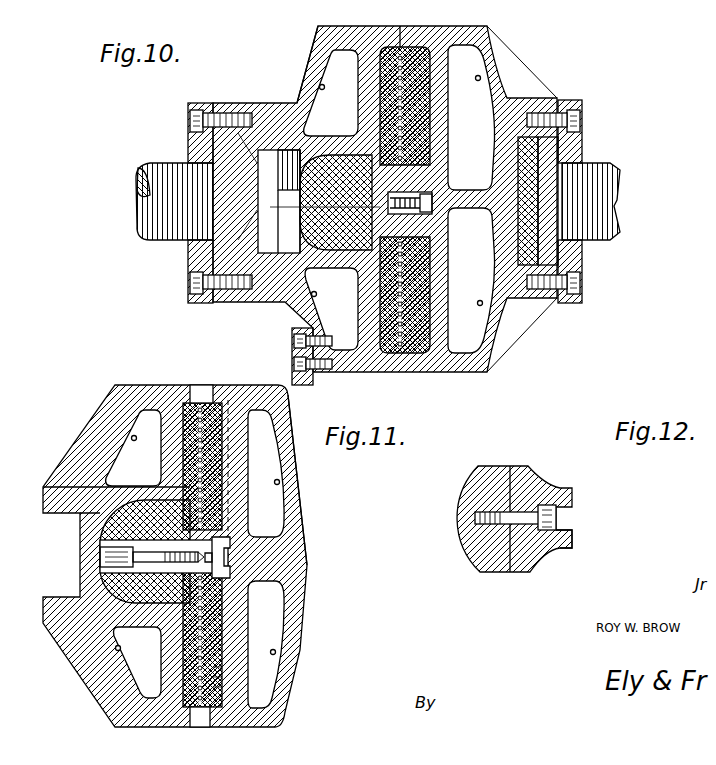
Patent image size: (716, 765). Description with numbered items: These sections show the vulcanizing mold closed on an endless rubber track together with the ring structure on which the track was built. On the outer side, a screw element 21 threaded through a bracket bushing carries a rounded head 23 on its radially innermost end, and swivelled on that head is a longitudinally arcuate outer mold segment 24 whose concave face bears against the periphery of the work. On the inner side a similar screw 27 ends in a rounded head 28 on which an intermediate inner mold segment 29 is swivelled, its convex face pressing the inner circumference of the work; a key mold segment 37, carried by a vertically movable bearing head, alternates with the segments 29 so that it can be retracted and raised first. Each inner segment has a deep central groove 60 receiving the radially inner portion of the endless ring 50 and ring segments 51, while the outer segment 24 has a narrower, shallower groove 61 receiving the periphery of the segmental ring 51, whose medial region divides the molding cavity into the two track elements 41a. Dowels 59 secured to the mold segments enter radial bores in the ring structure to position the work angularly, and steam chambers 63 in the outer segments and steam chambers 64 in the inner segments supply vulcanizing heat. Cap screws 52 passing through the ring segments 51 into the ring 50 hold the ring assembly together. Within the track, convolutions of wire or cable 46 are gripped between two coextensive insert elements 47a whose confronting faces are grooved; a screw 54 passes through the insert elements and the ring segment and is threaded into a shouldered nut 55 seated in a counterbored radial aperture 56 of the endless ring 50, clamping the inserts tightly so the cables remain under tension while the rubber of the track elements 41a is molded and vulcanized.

In FIG. 10, the screw element 21 is at (605, 164).
In FIG. 10, the rounded head 23 is at (578, 137).
In FIG. 10, the mold segment 24 is at (512, 342).
In FIG. 11, the mold segment 24 is at (298, 607).
In FIG. 10, the screw 27 is at (165, 164).
In FIG. 10, the rounded head 28 is at (190, 261).
In FIG. 10, the mold segment 29 is at (318, 62).
In FIG. 11, the mold segment 37 is at (139, 386).
In FIG. 10, the track element 41a is at (318, 27).
In FIG. 10, the wire or cable 46 is at (394, 355).
In FIG. 11, the wire or cable 46 is at (214, 688).
In FIG. 11, the insert element 47a is at (192, 718).
In FIG. 12, the endless ring 50 is at (482, 553).
In FIG. 12, the ring segment 51 is at (562, 545).
In FIG. 12, the cap screw 52 is at (556, 512).
In FIG. 11, the screw 54 is at (226, 550).
In FIG. 11, the shouldered nut 55 is at (100, 567).
In FIG. 11, the counterbored radial aperture 56 is at (100, 553).
In FIG. 10, the dowel 59 is at (452, 186).
In FIG. 10, the groove 60 is at (293, 150).
In FIG. 11, the groove 60 is at (112, 597).
In FIG. 10, the groove 61 is at (428, 216).
In FIG. 11, the groove 61 is at (228, 560).
In FIG. 10, the steam chamber 63 is at (481, 78).
In FIG. 11, the steam chamber 63 is at (280, 482).
In FIG. 10, the steam chamber 64 is at (319, 87).
In FIG. 11, the steam chamber 64 is at (131, 438).